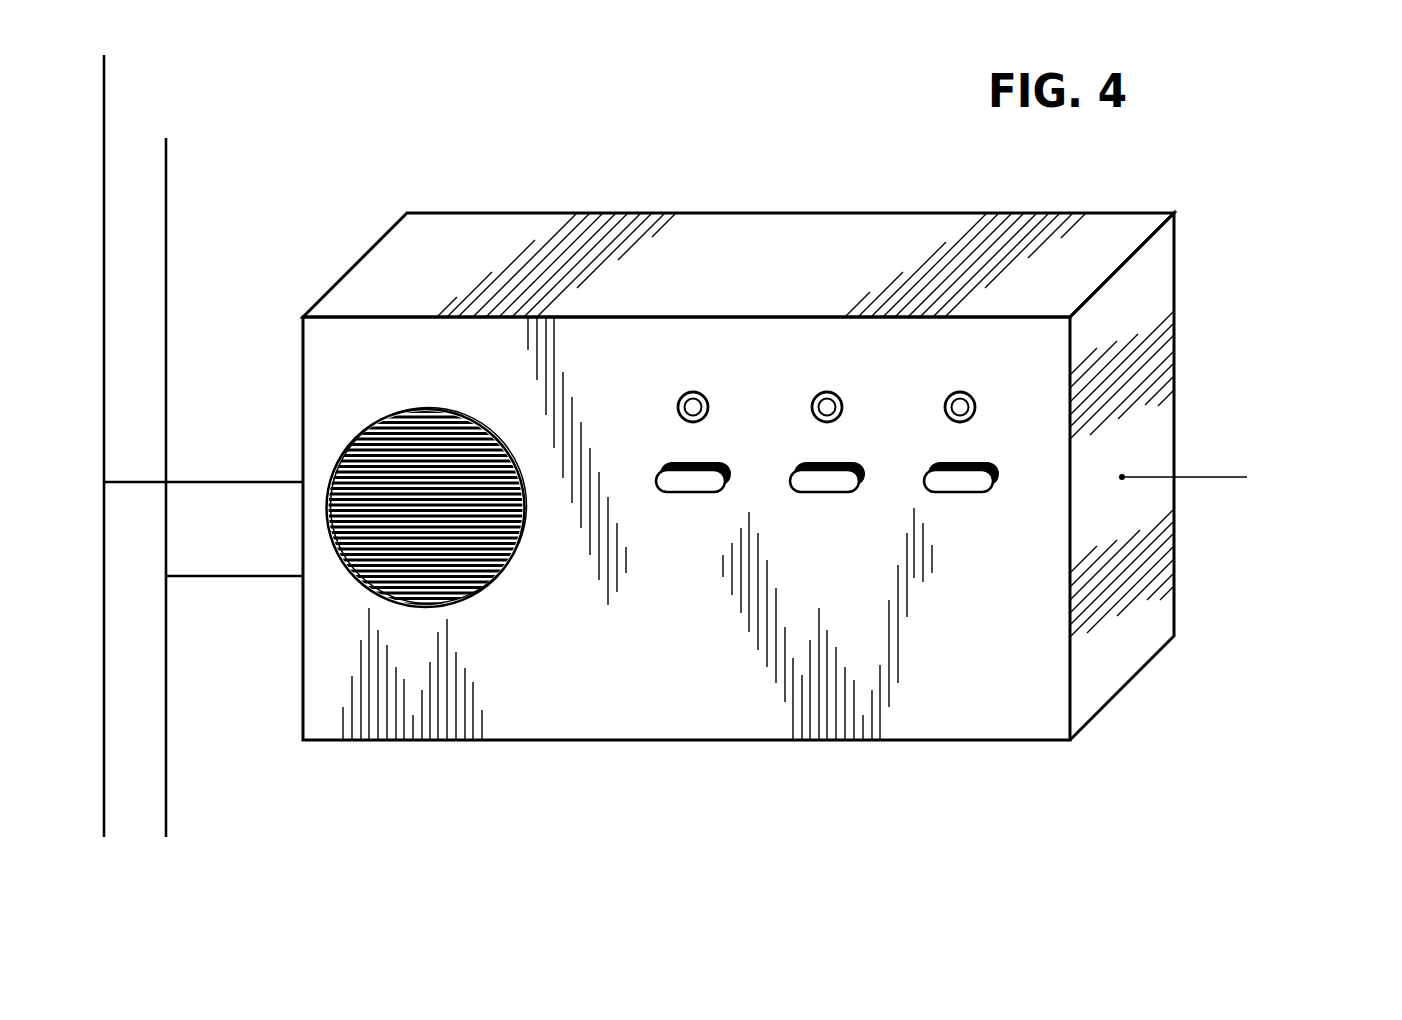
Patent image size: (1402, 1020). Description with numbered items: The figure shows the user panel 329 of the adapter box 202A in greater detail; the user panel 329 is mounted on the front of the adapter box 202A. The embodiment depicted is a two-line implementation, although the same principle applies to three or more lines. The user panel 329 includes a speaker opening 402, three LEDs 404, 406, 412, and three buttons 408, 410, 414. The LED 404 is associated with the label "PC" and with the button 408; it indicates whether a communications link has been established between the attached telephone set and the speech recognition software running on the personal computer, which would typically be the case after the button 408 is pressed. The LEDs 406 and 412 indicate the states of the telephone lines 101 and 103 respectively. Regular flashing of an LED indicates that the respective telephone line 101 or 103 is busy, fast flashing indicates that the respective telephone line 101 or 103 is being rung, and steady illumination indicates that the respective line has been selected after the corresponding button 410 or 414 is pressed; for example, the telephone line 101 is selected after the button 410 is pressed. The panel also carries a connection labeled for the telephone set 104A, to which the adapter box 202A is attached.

The telephone line 101 is at (166, 167).
The telephone line 103 is at (104, 90).
The adapter box 202A is at (760, 232).
The user panel 329 is at (642, 718).
The speaker opening 402 is at (417, 409).
The LED 404 is at (680, 411).
The LED 406 is at (816, 418).
The LED 412 is at (973, 418).
The button 408 is at (692, 496).
The button 410 is at (829, 496).
The button 414 is at (968, 495).
The telephone set connection 104A is at (1254, 478).